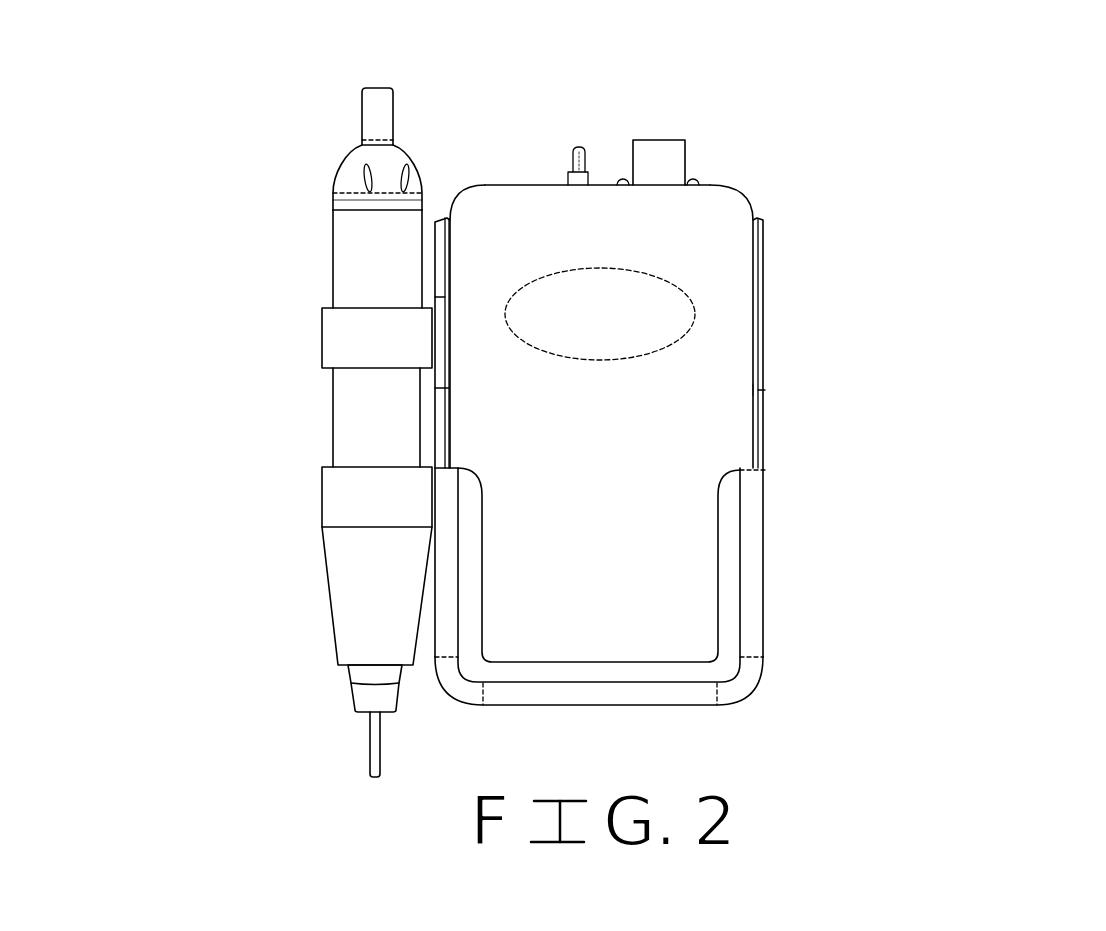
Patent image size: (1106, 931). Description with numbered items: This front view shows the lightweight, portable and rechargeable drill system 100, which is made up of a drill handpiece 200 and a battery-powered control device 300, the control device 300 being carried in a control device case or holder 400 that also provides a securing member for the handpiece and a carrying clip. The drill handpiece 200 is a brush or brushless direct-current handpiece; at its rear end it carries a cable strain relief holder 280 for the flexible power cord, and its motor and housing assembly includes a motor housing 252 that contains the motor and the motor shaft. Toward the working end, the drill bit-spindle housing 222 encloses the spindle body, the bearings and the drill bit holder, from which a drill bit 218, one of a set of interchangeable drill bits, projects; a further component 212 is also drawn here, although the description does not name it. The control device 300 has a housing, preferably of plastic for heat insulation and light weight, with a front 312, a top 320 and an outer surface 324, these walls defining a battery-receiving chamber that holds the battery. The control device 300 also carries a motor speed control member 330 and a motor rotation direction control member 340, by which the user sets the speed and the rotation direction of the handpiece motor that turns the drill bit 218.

The portable and rechargeable drill system 100 is at (870, 137).
The drill handpiece 200 is at (333, 275).
The cable strain relief holder 280 is at (345, 160).
The motor housing 252 is at (333, 421).
The control device case or holder 400 is at (340, 498).
The drill bit-spindle housing 222 is at (333, 603).
The collet / chuck 212 is at (352, 697).
The drill bit 218 is at (377, 758).
The battery-powered control device 300 is at (702, 373).
The top 320 is at (517, 186).
The motor rotation direction control member 340 is at (570, 177).
The motor speed control member 330 is at (688, 155).
The outer surface 324 is at (717, 410).
The front 312 is at (695, 453).